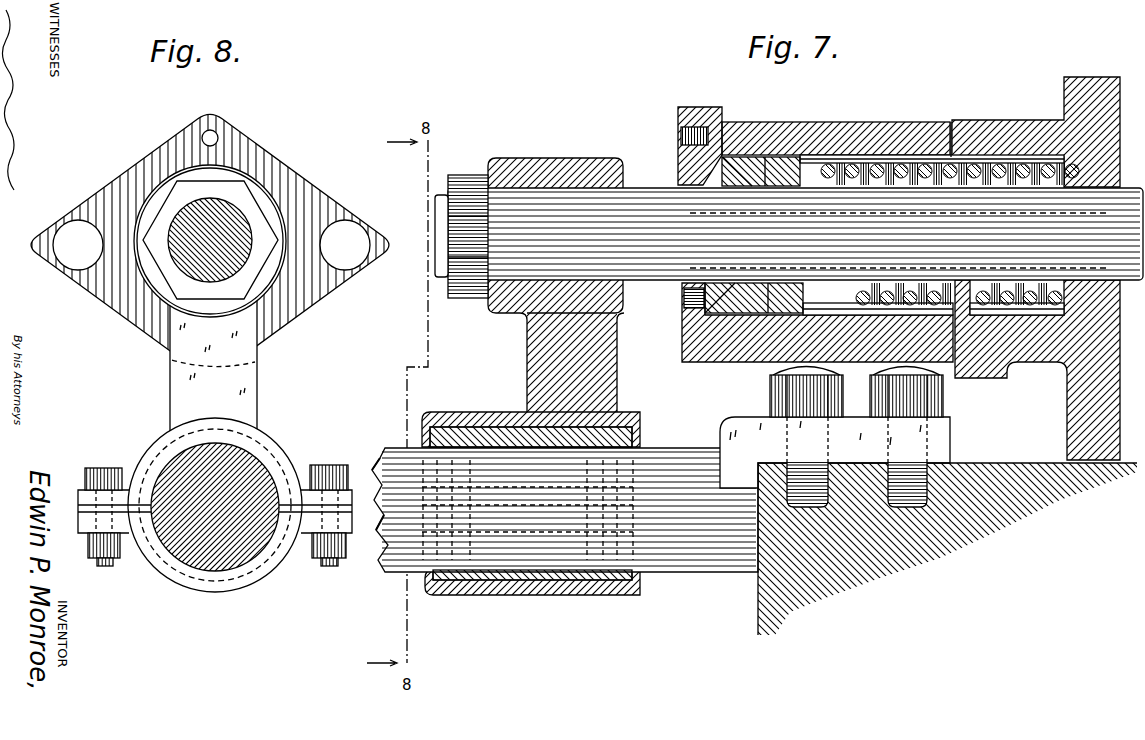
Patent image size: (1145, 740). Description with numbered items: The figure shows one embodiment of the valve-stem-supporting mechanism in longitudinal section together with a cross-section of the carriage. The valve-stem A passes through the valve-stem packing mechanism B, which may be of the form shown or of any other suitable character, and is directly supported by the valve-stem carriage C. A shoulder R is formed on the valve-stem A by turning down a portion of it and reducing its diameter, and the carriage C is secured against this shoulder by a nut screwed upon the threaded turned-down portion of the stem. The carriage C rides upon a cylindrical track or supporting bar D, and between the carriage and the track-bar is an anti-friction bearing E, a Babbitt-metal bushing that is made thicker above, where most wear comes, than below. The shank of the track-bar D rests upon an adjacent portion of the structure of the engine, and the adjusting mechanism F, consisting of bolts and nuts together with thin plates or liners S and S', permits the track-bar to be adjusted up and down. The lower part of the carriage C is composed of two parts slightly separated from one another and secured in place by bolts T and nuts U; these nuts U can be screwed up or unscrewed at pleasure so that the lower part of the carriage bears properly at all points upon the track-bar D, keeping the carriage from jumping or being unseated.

In FIG. 8, the valve-stem A is at (277, 298).
In FIG. 7, the valve-stem A is at (789, 236).
In FIG. 7, the valve-stem packing mechanism B is at (745, 160).
In FIG. 8, the valve-stem carriage C is at (219, 351).
In FIG. 7, the valve-stem carriage C is at (531, 454).
In FIG. 8, the track or supporting bar D is at (264, 471).
In FIG. 7, the track or supporting bar D is at (565, 510).
In FIG. 7, the anti-friction bearing E is at (462, 427).
In FIG. 7, the adjusting mechanism F is at (962, 452).
In FIG. 7, the shoulder R is at (568, 235).
In FIG. 7, the thin plates or liners S is at (800, 437).
In FIG. 7, the thin plates or liners S' is at (896, 437).
In FIG. 8, the bolts T is at (85, 482).
In FIG. 7, the bolts T is at (527, 510).
In FIG. 8, the nuts U is at (88, 548).
In FIG. 7, the nuts U is at (527, 510).